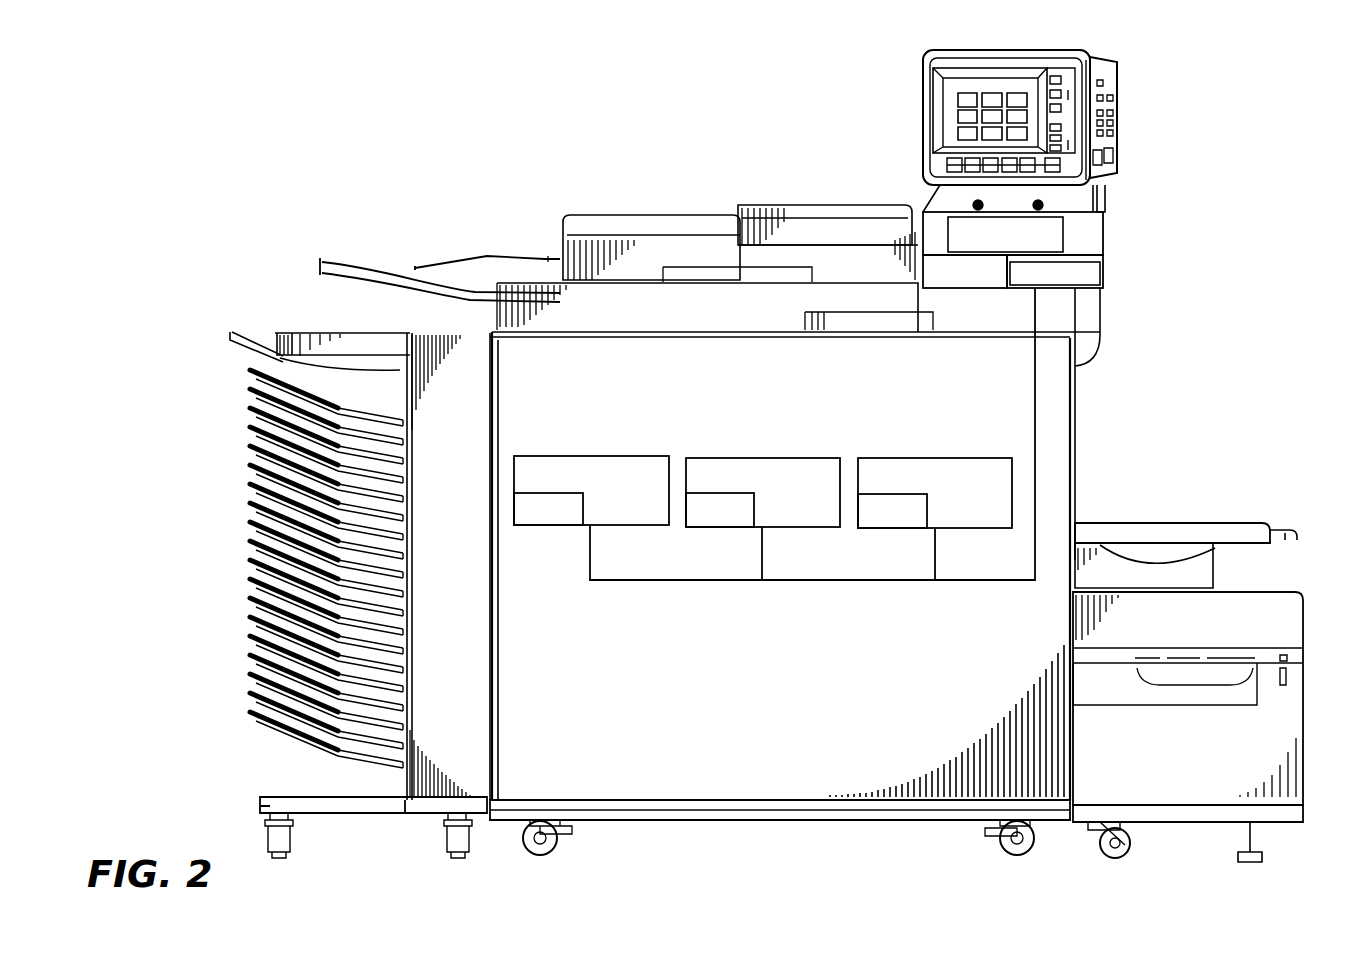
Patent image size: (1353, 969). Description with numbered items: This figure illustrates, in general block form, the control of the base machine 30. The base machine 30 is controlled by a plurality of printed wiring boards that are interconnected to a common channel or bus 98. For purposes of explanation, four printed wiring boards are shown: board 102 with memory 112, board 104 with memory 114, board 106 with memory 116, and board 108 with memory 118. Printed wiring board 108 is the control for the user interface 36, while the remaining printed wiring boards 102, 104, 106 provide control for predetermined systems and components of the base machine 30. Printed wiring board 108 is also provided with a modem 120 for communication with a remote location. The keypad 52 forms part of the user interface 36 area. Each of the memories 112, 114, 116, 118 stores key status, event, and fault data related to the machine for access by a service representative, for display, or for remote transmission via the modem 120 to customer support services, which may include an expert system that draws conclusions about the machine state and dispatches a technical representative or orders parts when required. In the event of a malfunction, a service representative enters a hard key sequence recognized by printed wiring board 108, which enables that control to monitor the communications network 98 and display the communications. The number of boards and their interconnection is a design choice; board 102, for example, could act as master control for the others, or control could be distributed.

The base machine 30 is at (1058, 485).
The user interface 36 is at (872, 104).
The control panel keypad 52 is at (1107, 122).
The bus 98 is at (812, 582).
The printed wiring board 102 is at (590, 456).
The printed wiring board 104 is at (762, 458).
The printed wiring board 106 is at (935, 458).
The printed wiring board 108 is at (1085, 232).
The memory 112 is at (548, 525).
The memory 114 is at (720, 527).
The memory 116 is at (892, 528).
The memory 118 is at (968, 288).
The modem 120 is at (1105, 265).